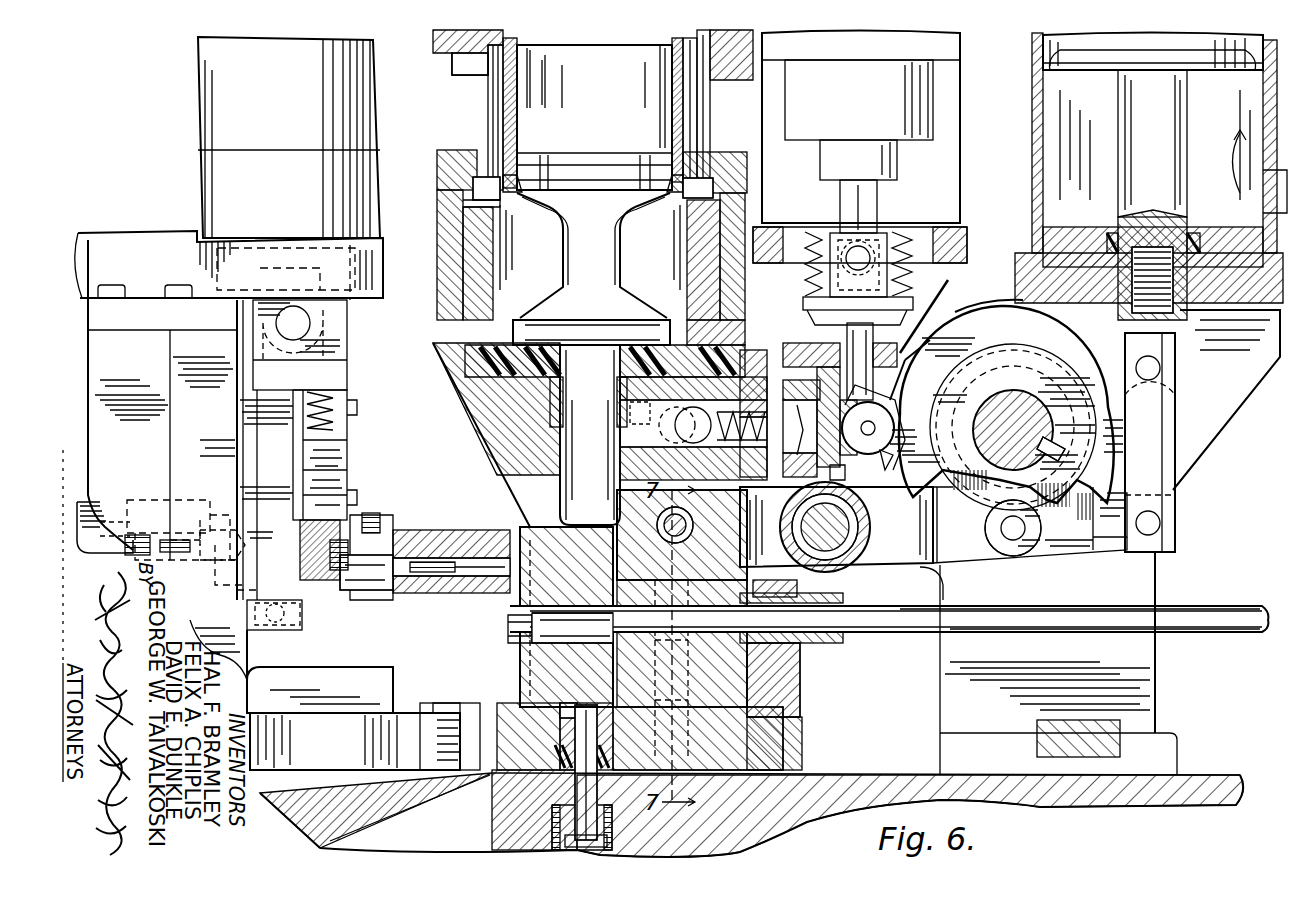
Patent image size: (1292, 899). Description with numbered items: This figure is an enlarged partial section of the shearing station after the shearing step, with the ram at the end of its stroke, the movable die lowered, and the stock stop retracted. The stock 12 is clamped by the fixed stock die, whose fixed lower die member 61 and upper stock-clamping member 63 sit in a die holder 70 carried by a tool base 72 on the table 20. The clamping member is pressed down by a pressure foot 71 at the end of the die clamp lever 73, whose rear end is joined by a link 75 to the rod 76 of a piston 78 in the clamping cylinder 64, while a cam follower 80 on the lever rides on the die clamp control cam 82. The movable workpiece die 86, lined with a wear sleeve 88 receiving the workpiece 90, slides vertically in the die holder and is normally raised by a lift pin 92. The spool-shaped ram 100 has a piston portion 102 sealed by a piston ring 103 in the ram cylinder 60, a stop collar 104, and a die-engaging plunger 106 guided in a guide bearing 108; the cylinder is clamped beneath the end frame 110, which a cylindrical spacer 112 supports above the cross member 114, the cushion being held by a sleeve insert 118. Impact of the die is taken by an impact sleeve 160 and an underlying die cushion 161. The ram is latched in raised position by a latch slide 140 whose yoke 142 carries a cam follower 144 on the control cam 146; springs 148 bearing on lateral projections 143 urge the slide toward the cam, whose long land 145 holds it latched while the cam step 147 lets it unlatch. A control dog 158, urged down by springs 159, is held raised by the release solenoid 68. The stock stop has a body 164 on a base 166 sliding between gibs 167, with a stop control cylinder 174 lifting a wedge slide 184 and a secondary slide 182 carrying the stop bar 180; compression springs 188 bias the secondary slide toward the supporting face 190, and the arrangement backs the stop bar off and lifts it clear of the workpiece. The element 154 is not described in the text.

The stock 12 is at (1110, 612).
The table 20 is at (807, 822).
The ram cylinder 60 is at (593, 110).
The fixed lower die member 61 is at (790, 660).
The upper stock-clamping member 63 is at (791, 607).
The clamping cylinder 64 is at (1036, 145).
The release solenoid 68 is at (866, 111).
The die holder 70 is at (800, 690).
The pressure foot 71 is at (682, 535).
The tool base 72 is at (790, 745).
The die clamp lever 73 is at (908, 536).
The link 75 is at (1160, 412).
The rod 76 is at (1162, 119).
The piston 78 is at (1152, 64).
The cam follower 80 is at (1012, 552).
The die clamp control cam 82 is at (985, 505).
The movable workpiece die 86 is at (592, 569).
The wear sleeve 88 is at (572, 628).
The workpiece 90 is at (508, 631).
The lift pin 92 is at (580, 790).
The ram 100 is at (598, 232).
The piston portion 102 is at (592, 165).
The piston ring 103 is at (528, 168).
The stop collar 104 is at (570, 320).
The die-engaging plunger 106 is at (609, 444).
The guide bearing 108 is at (563, 383).
The end frame 110 is at (448, 163).
The cylindrical spacer 112 is at (445, 220).
The cross member 114 is at (452, 375).
The sleeve insert 118 is at (462, 248).
The latch slide 140 is at (693, 428).
The yoke 142 is at (828, 365).
The lateral projections 143 is at (817, 476).
The cam follower 144 is at (885, 470).
The long land 145 is at (962, 312).
The control cam 146 is at (1012, 333).
The cam step 147 is at (892, 418).
The springs 148 is at (776, 430).
The housing wall 154 is at (688, 340).
The control dog 158 is at (862, 333).
The springs 159 is at (820, 240).
The impact sleeve 160 is at (555, 736).
The die cushion 161 is at (418, 810).
The body 164 is at (224, 482).
The base 166 is at (339, 749).
The gibs 167 is at (478, 715).
The stop control cylinder 174 is at (283, 121).
The stop bar 180 is at (450, 540).
The secondary slide 182 is at (347, 436).
The wedge slide 184 is at (278, 626).
The compression springs 188 is at (337, 395).
The supporting face 190 is at (380, 667).